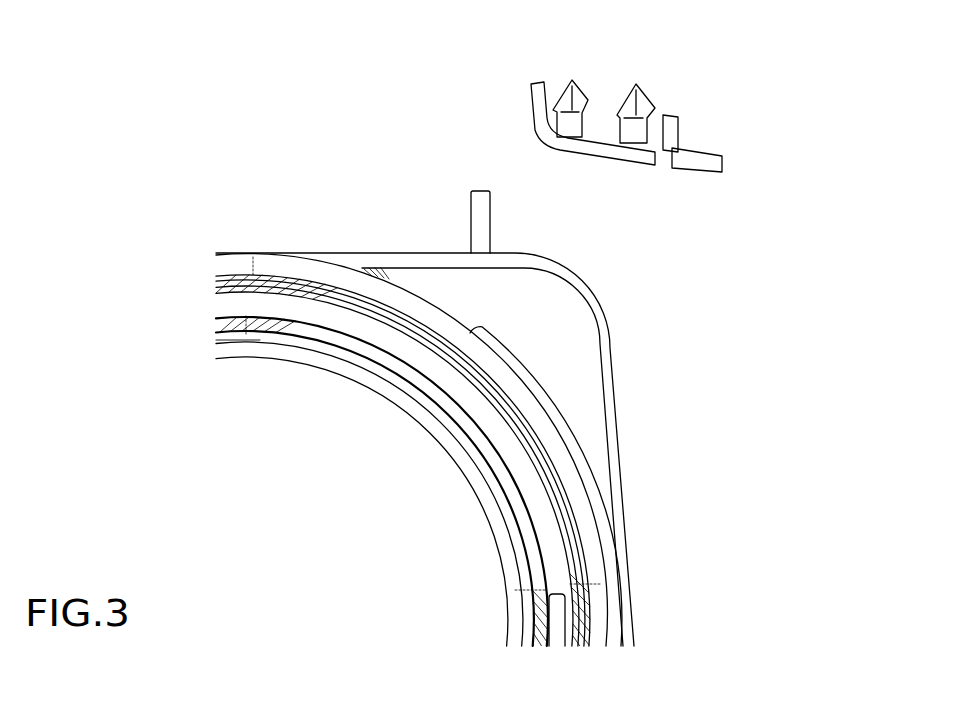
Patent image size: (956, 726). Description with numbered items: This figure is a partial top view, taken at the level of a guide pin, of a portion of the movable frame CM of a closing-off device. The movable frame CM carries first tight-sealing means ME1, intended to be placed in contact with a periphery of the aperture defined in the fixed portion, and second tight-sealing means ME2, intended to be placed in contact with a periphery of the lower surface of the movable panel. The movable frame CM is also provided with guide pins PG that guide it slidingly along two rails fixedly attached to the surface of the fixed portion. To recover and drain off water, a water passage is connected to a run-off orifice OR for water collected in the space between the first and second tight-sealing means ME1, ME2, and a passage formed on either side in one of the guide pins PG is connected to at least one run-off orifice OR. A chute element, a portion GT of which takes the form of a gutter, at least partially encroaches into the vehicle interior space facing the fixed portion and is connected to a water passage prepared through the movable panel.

The movable frame CM is at (690, 486).
The guide pin PG is at (477, 231).
The first tight-sealing means ME1 is at (222, 284).
The second tight-sealing means ME2 is at (222, 327).
The run-off orifice OR is at (558, 633).
The gutter portion of chute element GT is at (657, 123).